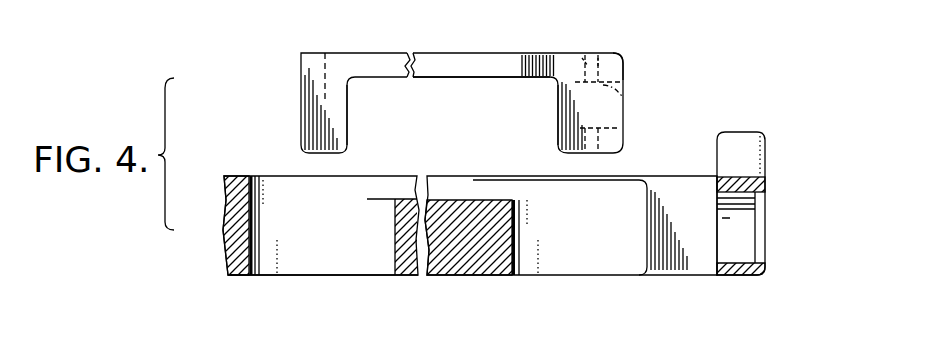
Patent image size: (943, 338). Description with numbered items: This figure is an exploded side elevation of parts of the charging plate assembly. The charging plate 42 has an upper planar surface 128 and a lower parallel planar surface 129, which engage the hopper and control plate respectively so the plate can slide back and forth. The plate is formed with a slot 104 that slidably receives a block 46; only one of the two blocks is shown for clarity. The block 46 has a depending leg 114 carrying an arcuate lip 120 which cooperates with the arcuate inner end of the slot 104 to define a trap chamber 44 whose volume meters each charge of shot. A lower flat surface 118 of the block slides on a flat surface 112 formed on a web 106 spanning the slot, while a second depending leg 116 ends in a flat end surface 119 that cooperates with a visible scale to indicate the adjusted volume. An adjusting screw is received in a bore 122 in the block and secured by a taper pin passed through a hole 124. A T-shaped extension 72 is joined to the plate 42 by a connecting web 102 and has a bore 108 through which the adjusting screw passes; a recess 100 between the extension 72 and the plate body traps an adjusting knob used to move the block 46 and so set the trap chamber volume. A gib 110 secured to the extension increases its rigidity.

The charging plate 42 is at (470, 276).
The trap chamber 44 is at (257, 184).
The block 46 is at (478, 52).
The T-shaped extension 72 is at (741, 278).
The recess 100 is at (652, 200).
The connecting web 102 is at (713, 219).
The slot 104 is at (350, 244).
The web 106 is at (518, 226).
The bore 108 is at (741, 264).
The gib 110 is at (767, 156).
The flat surface 112 is at (468, 200).
The leg 114 is at (348, 117).
The second depending leg 116 is at (558, 141).
The lower flat surface 118 is at (448, 79).
The flat end surface 119 is at (626, 66).
The arcuate lip 120 is at (325, 83).
The bore 122 is at (637, 98).
The hole 124 is at (592, 56).
The upper planar surface 128 is at (228, 176).
The lower parallel planar surface 129 is at (239, 278).